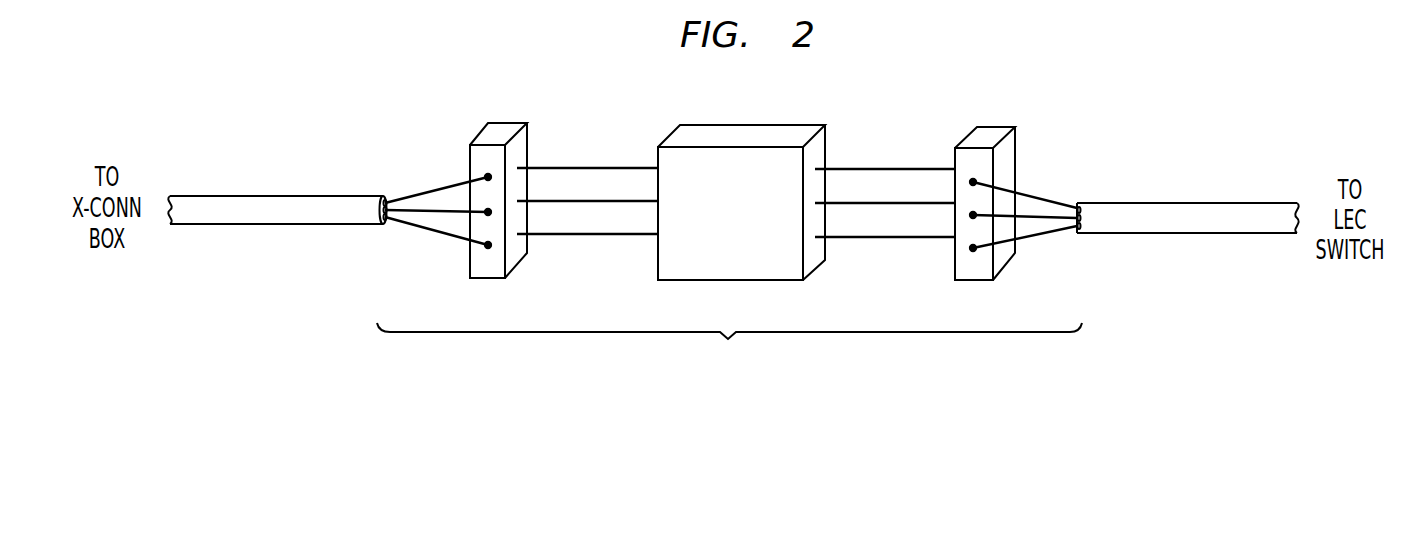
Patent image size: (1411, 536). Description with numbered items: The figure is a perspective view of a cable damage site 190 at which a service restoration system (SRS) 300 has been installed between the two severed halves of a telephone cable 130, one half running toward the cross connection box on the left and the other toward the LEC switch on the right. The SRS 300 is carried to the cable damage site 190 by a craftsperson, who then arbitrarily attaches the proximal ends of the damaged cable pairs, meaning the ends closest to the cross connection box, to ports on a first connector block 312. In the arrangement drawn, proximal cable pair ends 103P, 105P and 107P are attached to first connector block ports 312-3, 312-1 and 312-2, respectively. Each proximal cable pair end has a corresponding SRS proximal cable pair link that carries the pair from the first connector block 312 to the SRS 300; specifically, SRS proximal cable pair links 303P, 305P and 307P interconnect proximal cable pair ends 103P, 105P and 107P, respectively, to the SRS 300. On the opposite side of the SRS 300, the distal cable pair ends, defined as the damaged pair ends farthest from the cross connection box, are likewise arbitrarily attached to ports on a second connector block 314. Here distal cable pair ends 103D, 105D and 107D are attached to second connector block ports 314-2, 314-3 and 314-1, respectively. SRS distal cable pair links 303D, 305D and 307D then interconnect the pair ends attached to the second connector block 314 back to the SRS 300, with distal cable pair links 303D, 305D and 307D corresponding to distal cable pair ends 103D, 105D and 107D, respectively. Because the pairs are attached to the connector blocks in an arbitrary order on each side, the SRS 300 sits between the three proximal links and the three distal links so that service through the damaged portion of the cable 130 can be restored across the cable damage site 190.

The cable 130 is at (275, 196).
The first connector block 312 is at (507, 123).
The second connector block 314 is at (995, 130).
The service restoration system 300 is at (747, 130).
The proximal cable pair end 103P is at (487, 177).
The proximal cable pair end 107P is at (487, 212).
The proximal cable pair end 105P is at (487, 245).
The SRS proximal cable pair link 303P is at (577, 167).
The SRS proximal cable pair link 307P is at (630, 200).
The SRS proximal cable pair link 305P is at (623, 240).
The first connector block port 312-1 is at (488, 245).
The first connector block port 312-2 is at (488, 212).
The first connector block port 312-3 is at (488, 177).
The SRS distal cable pair link 303D is at (853, 202).
The SRS distal cable pair link 307D is at (920, 168).
The SRS distal cable pair link 305D is at (850, 243).
The second connector block port 314-1 is at (973, 248).
The second connector block port 314-2 is at (973, 215).
The second connector block port 314-3 is at (973, 182).
The distal cable pair end 107D is at (973, 182).
The distal cable pair end 103D is at (973, 215).
The distal cable pair end 105D is at (973, 248).
The cable damage site 190 is at (729, 391).